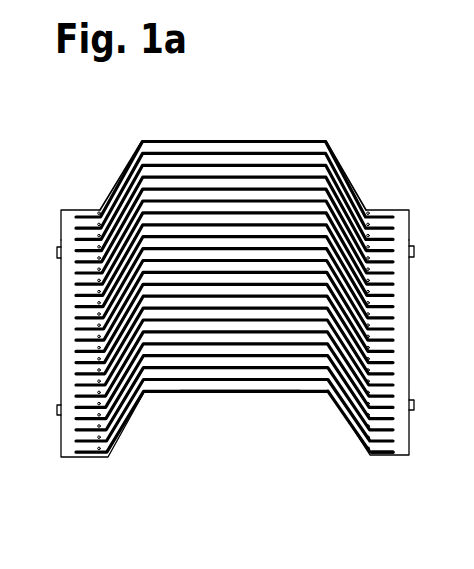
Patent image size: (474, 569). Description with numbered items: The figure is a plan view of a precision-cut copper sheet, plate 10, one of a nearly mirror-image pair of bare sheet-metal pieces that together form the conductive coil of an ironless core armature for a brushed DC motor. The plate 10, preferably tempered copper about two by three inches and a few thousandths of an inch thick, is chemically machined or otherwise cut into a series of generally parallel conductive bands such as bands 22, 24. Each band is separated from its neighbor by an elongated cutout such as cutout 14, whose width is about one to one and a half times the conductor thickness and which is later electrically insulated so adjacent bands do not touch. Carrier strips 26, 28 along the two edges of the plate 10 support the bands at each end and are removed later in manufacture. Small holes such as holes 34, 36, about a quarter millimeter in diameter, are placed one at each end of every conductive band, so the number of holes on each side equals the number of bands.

The plate 10 is at (335, 105).
The cutout 14 is at (383, 447).
The conductive band 22 is at (152, 389).
The conductive band 24 is at (217, 374).
The carrier strip 26 is at (71, 455).
The carrier strip 28 is at (407, 457).
The hole 34 is at (100, 212).
The hole 36 is at (368, 212).